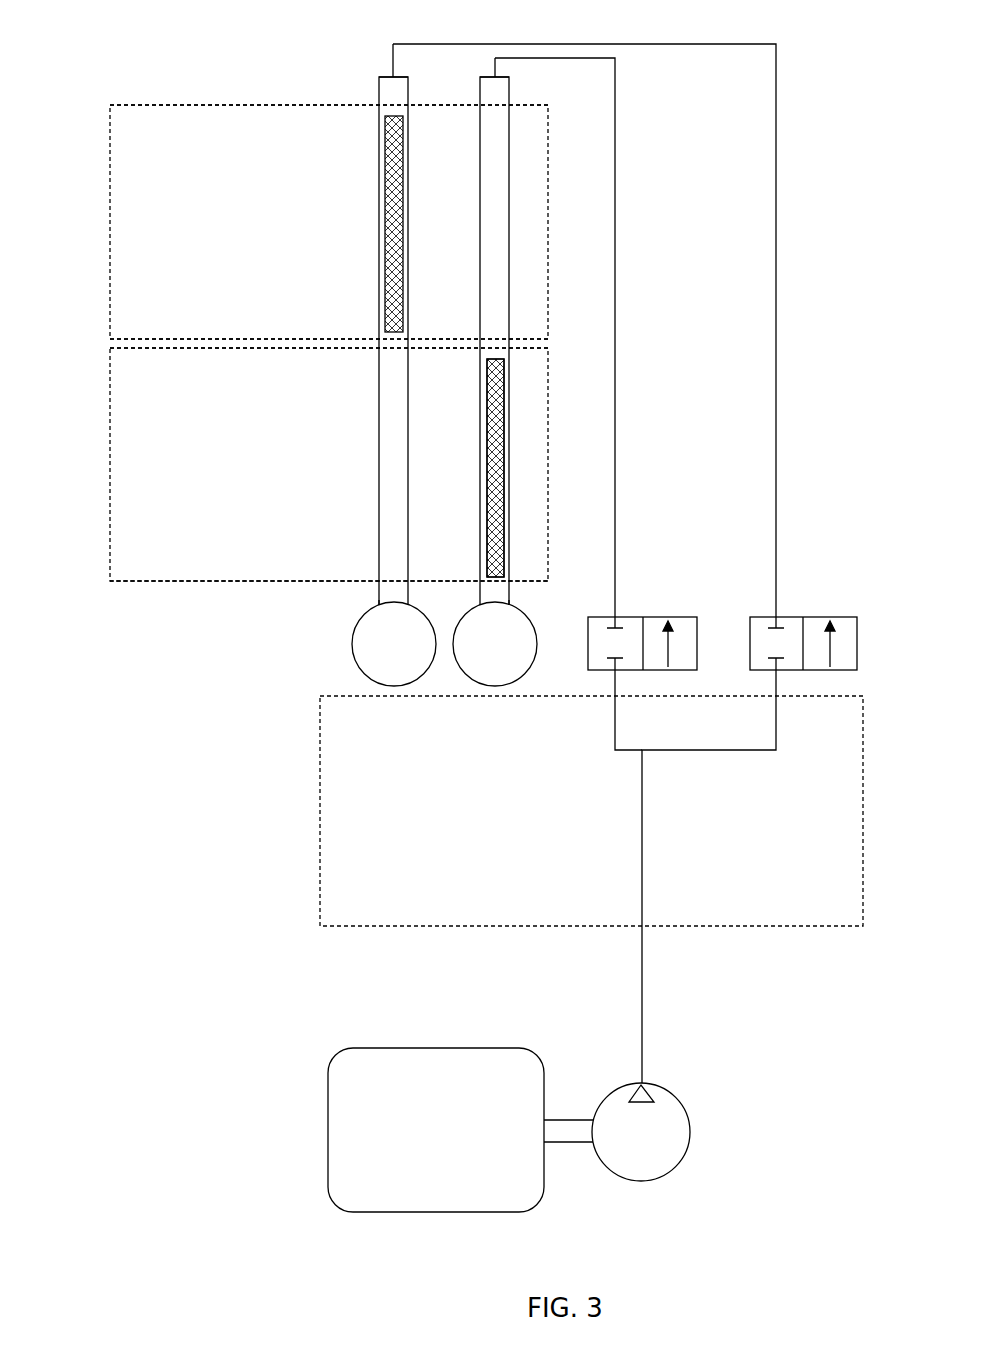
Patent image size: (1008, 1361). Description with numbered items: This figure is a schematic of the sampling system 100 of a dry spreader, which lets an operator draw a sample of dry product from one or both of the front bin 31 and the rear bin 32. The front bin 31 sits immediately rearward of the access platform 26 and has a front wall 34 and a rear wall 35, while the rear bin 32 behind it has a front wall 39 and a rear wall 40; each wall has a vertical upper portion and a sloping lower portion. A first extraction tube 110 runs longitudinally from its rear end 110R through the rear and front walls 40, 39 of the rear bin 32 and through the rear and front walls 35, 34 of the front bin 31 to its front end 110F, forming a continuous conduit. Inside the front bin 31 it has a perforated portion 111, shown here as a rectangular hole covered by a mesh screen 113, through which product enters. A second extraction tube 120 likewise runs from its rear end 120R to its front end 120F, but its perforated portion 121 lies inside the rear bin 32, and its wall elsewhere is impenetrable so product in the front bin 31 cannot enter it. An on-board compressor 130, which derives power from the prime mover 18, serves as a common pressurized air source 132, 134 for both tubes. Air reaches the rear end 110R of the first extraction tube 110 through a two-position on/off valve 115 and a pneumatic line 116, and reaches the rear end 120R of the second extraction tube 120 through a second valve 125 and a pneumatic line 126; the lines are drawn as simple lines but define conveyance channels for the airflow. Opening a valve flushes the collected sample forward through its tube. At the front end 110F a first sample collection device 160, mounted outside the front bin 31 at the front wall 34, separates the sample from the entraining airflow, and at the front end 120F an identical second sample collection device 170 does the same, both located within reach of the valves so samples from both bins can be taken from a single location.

The sampling system 100 is at (190, 752).
The prime mover 18 is at (352, 1212).
The access platform 26 is at (795, 926).
The front bin 31 is at (160, 581).
The rear bin 32 is at (110, 182).
The front wall 34 is at (237, 581).
The rear wall 35 is at (270, 348).
The front wall 39 is at (290, 339).
The rear wall 40 is at (252, 105).
The first extraction tube 110 is at (480, 391).
The perforated portion 111 is at (487, 494).
The mesh screen 113 is at (490, 437).
The two-position on/off valve 115 is at (678, 617).
The pneumatic line 116 is at (615, 280).
The second extraction tube 120 is at (379, 155).
The perforated portion 121 is at (392, 215).
The second valve 125 is at (843, 617).
The pneumatic line 126 is at (776, 280).
The on-board compressor 130 is at (675, 1170).
The pressurized air source 132 is at (615, 750).
The pressurized air source 134 is at (776, 732).
The first sample collection device 160 is at (525, 675).
The second sample collection device 170 is at (352, 660).
The front end 110F is at (510, 592).
The rear end 110R is at (505, 72).
The front end 120F is at (379, 595).
The rear end 120R is at (379, 100).